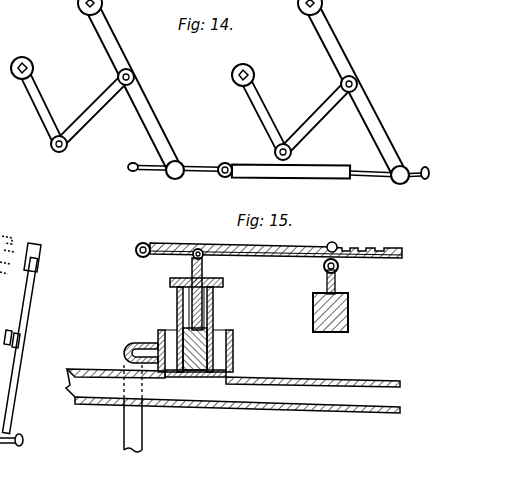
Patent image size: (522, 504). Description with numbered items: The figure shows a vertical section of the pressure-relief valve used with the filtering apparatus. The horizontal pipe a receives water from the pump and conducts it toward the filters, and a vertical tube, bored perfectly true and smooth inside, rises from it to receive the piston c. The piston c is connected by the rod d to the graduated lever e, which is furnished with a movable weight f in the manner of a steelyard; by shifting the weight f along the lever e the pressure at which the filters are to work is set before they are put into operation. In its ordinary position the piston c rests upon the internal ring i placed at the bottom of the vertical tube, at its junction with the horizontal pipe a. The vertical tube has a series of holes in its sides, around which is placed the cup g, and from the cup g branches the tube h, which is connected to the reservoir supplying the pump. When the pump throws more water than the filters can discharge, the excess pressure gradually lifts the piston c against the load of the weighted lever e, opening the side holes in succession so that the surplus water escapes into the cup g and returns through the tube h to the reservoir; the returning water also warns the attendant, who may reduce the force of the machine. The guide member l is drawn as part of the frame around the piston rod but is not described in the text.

The pipe a is at (233, 391).
The piston c is at (195, 349).
The rod d is at (204, 294).
The graduated lever e is at (198, 244).
The movable weight f is at (322, 287).
The cup g is at (195, 351).
The tube h is at (131, 397).
The internal ring i is at (195, 380).
The frame l is at (193, 325).